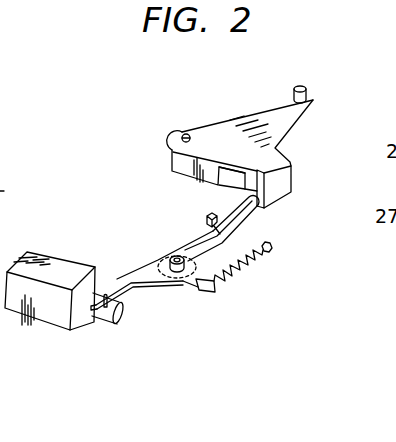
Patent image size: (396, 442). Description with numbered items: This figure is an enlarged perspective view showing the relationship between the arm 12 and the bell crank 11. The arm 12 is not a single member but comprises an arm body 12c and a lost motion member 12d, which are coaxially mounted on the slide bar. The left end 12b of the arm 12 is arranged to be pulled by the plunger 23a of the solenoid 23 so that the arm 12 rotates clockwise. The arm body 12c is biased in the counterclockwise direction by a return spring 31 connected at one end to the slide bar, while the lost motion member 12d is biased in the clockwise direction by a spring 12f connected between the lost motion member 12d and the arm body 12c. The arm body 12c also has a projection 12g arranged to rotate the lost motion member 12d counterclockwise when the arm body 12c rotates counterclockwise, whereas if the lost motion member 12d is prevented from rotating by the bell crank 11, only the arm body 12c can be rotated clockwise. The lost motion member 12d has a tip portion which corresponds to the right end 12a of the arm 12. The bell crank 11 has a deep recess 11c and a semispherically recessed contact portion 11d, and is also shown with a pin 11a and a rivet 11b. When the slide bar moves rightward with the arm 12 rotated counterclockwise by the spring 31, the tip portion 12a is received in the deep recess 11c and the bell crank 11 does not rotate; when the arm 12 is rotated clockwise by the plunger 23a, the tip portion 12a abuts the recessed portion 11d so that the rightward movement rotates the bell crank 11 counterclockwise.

The bell crank 11 is at (239, 98).
The pin 11a is at (307, 86).
The rivet 11b is at (183, 134).
The deep recess 11c is at (233, 181).
The contact portion 11d is at (290, 170).
The arm 12 is at (211, 299).
The right end 12a is at (259, 209).
The left end 12b is at (95, 308).
The arm body 12c is at (150, 286).
The lost motion member 12d is at (245, 220).
The spring 12f is at (206, 223).
The projection 12g is at (197, 291).
The solenoid 23 is at (62, 268).
The plunger 23a is at (107, 323).
The return spring 31 is at (236, 274).